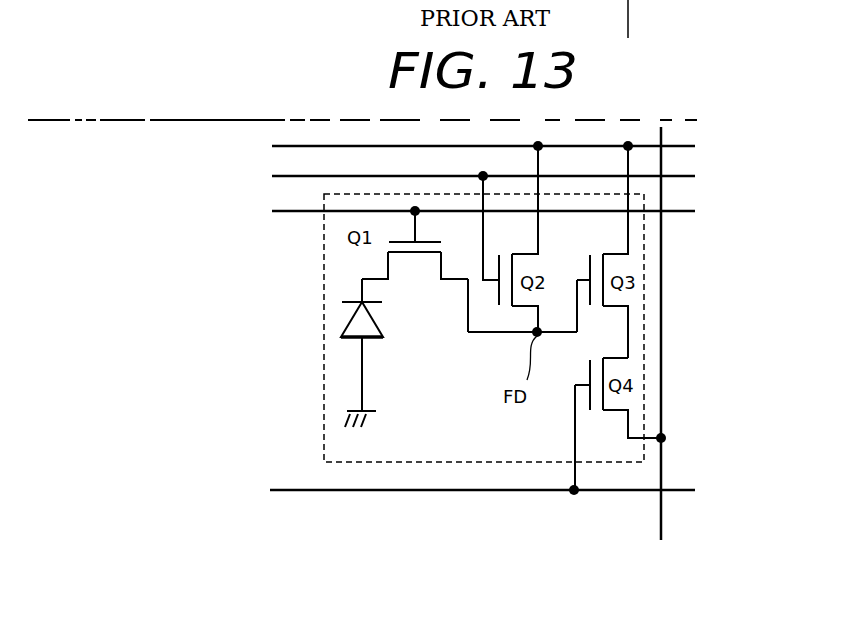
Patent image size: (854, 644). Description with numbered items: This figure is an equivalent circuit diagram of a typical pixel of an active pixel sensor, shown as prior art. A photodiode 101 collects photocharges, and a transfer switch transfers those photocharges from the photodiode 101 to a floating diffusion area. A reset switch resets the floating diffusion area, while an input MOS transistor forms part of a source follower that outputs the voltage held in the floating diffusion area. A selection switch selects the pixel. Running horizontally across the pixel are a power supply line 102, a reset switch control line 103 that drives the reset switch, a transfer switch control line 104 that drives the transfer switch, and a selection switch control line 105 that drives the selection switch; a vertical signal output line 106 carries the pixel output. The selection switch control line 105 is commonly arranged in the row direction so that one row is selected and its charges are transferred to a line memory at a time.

The photodiode 101 is at (347, 320).
The power supply line 102 is at (680, 149).
The reset switch control line 103 is at (680, 179).
The transfer switch control line 104 is at (680, 214).
The selection switch control line 105 is at (680, 493).
The signal output line 106 is at (657, 518).